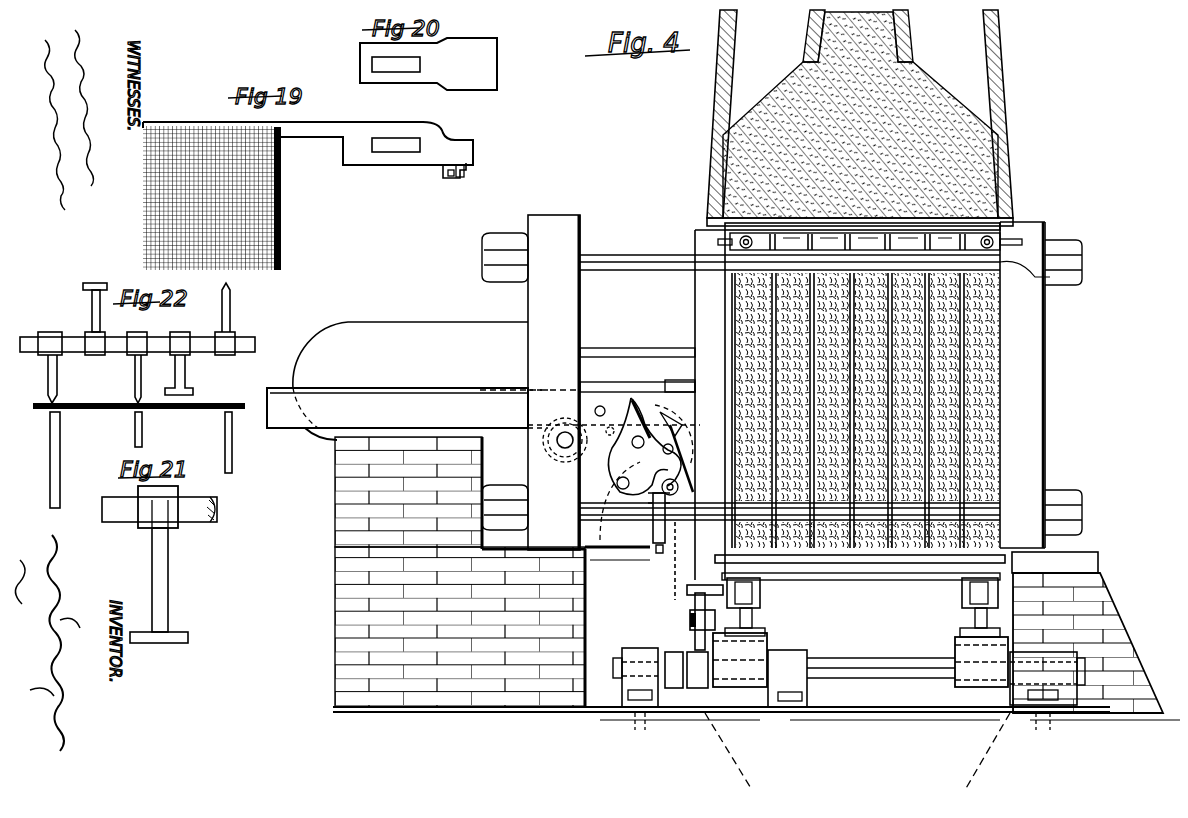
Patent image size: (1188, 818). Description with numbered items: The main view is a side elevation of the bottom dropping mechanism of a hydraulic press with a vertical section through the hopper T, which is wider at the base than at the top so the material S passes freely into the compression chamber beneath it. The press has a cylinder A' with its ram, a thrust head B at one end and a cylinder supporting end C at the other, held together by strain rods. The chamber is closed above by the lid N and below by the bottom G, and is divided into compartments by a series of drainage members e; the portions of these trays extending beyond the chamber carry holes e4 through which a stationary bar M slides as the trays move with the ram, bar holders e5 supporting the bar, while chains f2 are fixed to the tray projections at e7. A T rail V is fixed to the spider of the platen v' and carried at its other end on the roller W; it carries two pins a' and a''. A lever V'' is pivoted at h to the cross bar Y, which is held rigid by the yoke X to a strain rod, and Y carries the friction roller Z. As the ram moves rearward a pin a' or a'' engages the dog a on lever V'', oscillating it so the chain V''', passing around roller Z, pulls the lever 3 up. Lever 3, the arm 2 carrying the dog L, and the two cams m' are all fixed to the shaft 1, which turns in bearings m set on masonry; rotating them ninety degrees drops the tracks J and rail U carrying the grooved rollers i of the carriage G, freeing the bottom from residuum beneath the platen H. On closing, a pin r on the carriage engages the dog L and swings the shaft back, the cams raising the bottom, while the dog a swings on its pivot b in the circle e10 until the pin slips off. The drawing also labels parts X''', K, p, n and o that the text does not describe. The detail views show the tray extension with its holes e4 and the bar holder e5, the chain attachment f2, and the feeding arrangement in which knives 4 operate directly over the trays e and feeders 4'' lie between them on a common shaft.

In FIG. 4, the hopper T is at (1007, 94).
In FIG. 4, the material in hopper S is at (1012, 205).
In FIG. 22, the lid of the compression chamber N is at (100, 400).
In FIG. 4, the lid of the compression chamber N is at (1012, 232).
In FIG. 4, the bar M is at (1015, 240).
In FIG. 4, the thrust head B is at (1037, 405).
In FIG. 20, the bar holder e5 is at (490, 52).
In FIG. 4, the bar holder e5 is at (1022, 240).
In FIG. 19, the holes e4 is at (387, 148).
In FIG. 4, the holes e4 is at (1050, 277).
In FIG. 19, the chain attachment point e7 is at (456, 180).
In FIG. 19, the chains f2 is at (472, 190).
In FIG. 22, the drainage members e is at (60, 430).
In FIG. 4, the drainage members e is at (993, 315).
In FIG. 4, the bottom G is at (790, 559).
In FIG. 4, the cylinder A' is at (436, 382).
In FIG. 4, the T rail V is at (407, 414).
In FIG. 4, the pin a'' is at (587, 373).
In FIG. 4, the pin a' is at (637, 388).
In FIG. 4, the spider of the platen v' is at (648, 376).
In FIG. 4, the pivot b is at (614, 450).
In FIG. 4, the roller W is at (557, 447).
In FIG. 4, the lever V'' is at (563, 486).
In FIG. 4, the hydraulic cylinder supporting end C is at (556, 498).
In FIG. 4, the platen H is at (660, 469).
In FIG. 4, the friction roller Z is at (680, 487).
In FIG. 4, the circle e10 is at (682, 425).
In FIG. 4, the dog a is at (662, 411).
In FIG. 4, the yoke X is at (657, 546).
In FIG. 4, the pivot h is at (612, 490).
In FIG. 4, the cross bar Y is at (599, 547).
In FIG. 4, the bracket X''' is at (622, 580).
In FIG. 4, the chain V''' is at (657, 585).
In FIG. 4, the pin r is at (835, 697).
In FIG. 4, the lever K is at (690, 620).
In FIG. 4, the dog L is at (695, 606).
In FIG. 4, the bearing p is at (630, 648).
In FIG. 4, the lever 3 is at (672, 690).
In FIG. 4, the arm 2 is at (696, 690).
In FIG. 4, the cams m' is at (860, 660).
In FIG. 4, the bearings m is at (860, 680).
In FIG. 4, the shaft 1 is at (880, 676).
In FIG. 4, the base n is at (1010, 700).
In FIG. 4, the roller bracket o is at (760, 588).
In FIG. 4, the roller supports i is at (760, 600).
In FIG. 4, the tracks J is at (765, 628).
In FIG. 4, the rail U is at (838, 570).
In FIG. 22, the feeders 4'' is at (125, 339).
In FIG. 21, the feeders 4'' is at (170, 571).
In FIG. 22, the knives 4 is at (154, 343).